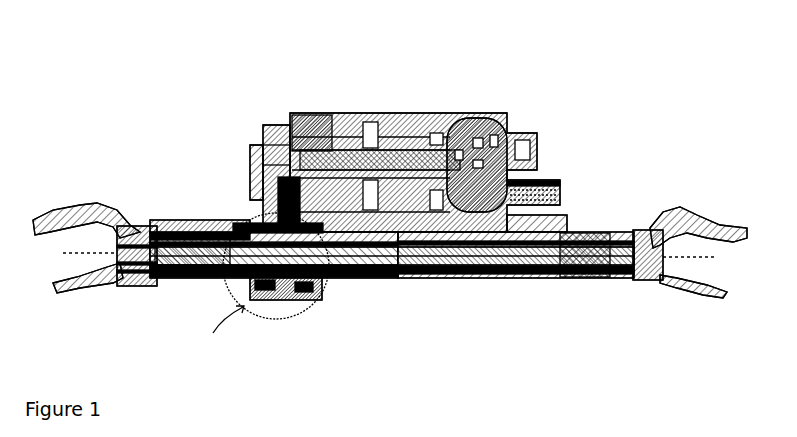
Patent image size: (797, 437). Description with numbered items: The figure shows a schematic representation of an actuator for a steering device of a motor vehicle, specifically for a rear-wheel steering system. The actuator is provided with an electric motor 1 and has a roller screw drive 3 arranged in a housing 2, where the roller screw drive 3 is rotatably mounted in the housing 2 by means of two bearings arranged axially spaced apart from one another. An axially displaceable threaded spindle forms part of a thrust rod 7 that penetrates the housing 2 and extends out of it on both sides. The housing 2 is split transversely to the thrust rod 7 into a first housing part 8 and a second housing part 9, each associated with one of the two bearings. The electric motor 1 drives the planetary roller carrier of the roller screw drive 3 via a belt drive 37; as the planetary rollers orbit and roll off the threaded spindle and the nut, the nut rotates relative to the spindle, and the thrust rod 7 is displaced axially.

The electric motor 1 is at (380, 117).
The housing 2 is at (258, 192).
The belt drive 37 is at (263, 193).
The roller screw drive 3 is at (272, 300).
The thrust rod 7 is at (517, 275).
The first housing part 8 is at (195, 282).
The second housing part 9 is at (367, 283).